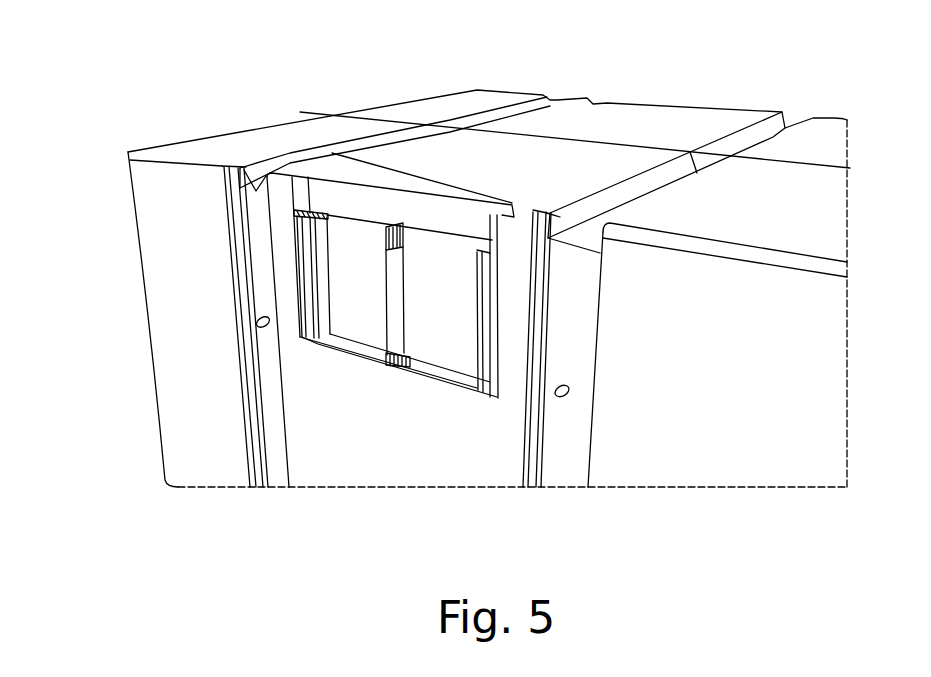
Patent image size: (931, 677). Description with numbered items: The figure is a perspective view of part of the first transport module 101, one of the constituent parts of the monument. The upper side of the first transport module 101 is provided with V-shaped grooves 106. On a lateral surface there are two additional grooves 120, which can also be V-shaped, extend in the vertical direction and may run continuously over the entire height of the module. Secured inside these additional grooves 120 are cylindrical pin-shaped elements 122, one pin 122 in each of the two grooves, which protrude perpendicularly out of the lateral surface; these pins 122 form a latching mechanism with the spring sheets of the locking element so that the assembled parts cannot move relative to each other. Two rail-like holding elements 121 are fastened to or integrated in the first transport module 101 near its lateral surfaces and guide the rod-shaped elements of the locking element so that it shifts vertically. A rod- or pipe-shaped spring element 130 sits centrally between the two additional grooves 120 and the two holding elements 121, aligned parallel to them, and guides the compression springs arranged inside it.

The first transport module 101 is at (121, 115).
The V-shaped grooves 106 is at (393, 135).
The additional grooves 120 is at (262, 291).
The holding elements 121 is at (327, 215).
The pin-shaped elements 122 is at (257, 324).
The spring element 130 is at (398, 270).